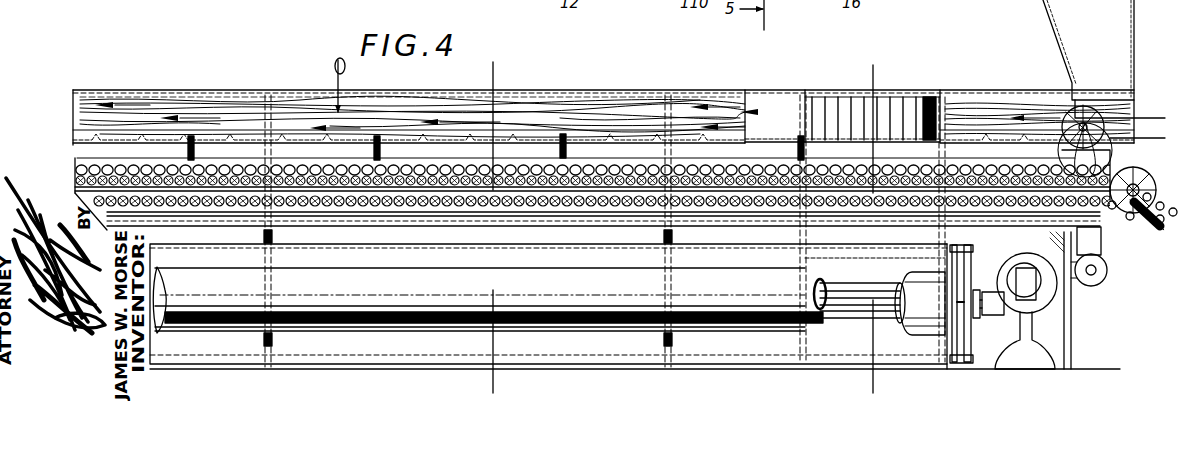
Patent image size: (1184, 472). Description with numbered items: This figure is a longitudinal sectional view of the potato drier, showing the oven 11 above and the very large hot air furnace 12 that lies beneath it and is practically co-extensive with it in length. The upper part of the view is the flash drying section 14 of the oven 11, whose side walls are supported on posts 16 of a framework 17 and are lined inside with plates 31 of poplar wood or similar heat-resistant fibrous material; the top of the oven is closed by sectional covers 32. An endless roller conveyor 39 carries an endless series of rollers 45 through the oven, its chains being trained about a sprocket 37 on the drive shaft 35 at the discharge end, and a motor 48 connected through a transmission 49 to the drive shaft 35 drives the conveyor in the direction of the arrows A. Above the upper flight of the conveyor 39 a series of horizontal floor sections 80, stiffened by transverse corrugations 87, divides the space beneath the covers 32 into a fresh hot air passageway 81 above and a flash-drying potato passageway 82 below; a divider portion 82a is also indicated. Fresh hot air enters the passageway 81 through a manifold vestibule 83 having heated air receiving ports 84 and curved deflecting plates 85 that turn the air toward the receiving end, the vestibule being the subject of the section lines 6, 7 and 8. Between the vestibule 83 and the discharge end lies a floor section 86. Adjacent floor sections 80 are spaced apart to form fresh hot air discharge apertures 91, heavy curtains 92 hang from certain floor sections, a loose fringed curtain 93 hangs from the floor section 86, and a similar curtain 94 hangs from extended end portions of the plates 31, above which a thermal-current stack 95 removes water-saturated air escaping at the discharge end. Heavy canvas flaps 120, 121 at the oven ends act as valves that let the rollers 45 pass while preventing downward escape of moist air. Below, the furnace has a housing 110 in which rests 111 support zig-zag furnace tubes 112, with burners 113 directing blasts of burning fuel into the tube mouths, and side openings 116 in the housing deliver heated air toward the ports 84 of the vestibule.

The section line 6— 6 is at (491, 74).
The section line 7— 7 is at (871, 74).
The section line 8— 8 is at (1156, 116).
The oven 11 is at (600, 106).
The hot air furnace 12 is at (400, 345).
The flash drying section 14 is at (512, 108).
The posts 16 is at (264, 360).
The framework 17 is at (1074, 352).
The plates 31 is at (731, 104).
The sectional covers 32 is at (318, 108).
The drive shaft 35 is at (1122, 222).
The sprocket 37 is at (1136, 180).
The endless roller conveyor 39 is at (712, 207).
The rollers 45 is at (578, 207).
The motor 48 is at (1100, 284).
The transmission 49 is at (1108, 270).
The floor sections 80 is at (118, 138).
The fresh hot air passageway 81 is at (234, 106).
The flash-drying potato passageway 82 is at (97, 157).
The divider section 82a is at (760, 140).
The manifold vestibule 83 is at (895, 112).
The heated air receiving ports 84 is at (820, 104).
The curved deflecting plates 85 is at (792, 110).
The floor section 86 is at (1008, 122).
The transverse corrugations 87 is at (153, 138).
The fresh hot air discharge apertures 91 is at (192, 136).
The heavy curtains 92 is at (195, 160).
The flexible fringed curtain 93 is at (1070, 150).
The curtain 94 is at (1110, 147).
The thermal-current stack 95 is at (1060, 50).
The housing 110 is at (540, 358).
The rests 111 is at (280, 346).
The furnace tubes 112 is at (740, 290).
The burners 113 is at (1002, 274).
The side openings 116 is at (855, 272).
The canvas flap 120 is at (1102, 228).
The canvas flap 121 is at (1078, 238).
The arrows A is at (926, 168).